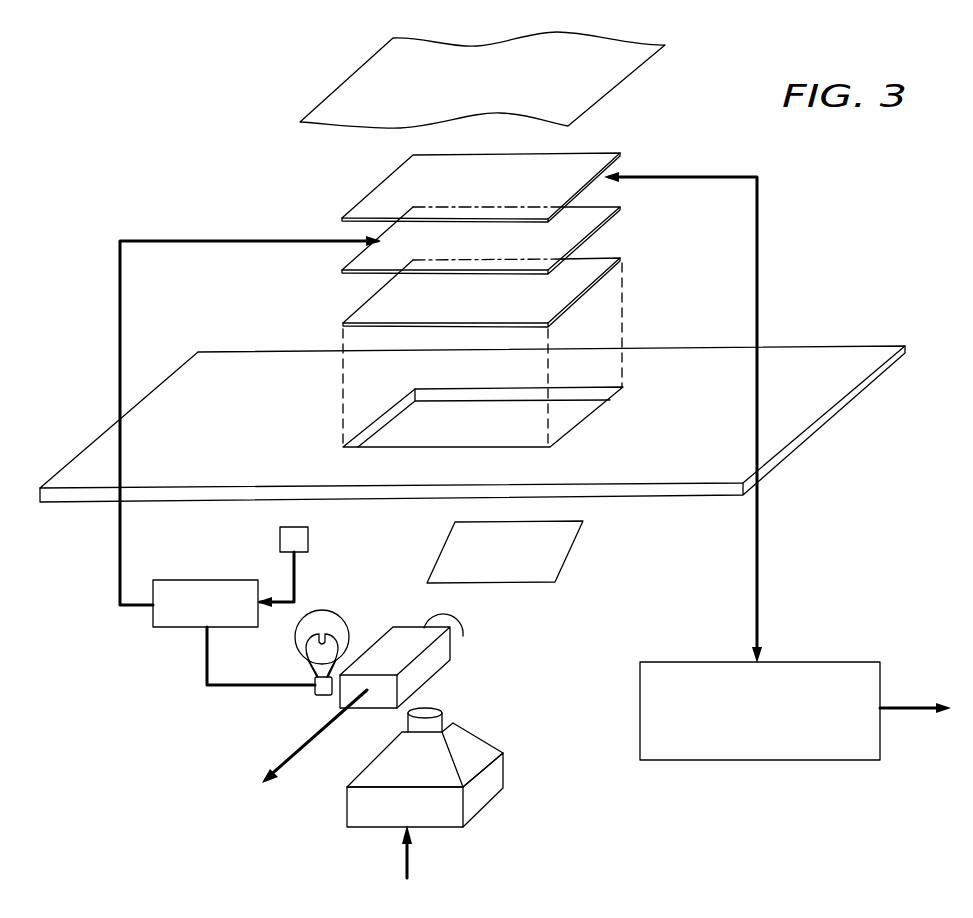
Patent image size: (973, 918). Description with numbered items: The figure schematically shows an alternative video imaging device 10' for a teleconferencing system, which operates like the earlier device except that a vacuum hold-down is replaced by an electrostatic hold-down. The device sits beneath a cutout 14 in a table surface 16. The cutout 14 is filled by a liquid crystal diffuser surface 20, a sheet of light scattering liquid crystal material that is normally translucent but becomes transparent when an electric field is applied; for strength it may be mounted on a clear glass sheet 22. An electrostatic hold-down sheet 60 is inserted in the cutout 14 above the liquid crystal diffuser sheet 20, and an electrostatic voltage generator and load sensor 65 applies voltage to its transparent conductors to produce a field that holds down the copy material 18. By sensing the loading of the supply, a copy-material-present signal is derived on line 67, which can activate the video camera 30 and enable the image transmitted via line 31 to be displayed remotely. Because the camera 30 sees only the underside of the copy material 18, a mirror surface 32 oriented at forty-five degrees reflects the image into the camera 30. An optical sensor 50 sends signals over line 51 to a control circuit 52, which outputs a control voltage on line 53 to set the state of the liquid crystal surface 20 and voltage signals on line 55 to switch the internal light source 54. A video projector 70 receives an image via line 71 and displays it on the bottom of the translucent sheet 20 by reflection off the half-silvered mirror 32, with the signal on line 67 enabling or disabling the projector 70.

The alternative video imaging device 10' is at (864, 179).
The copy material 18 is at (607, 62).
The electrostatic hold-down sheet 60 is at (607, 157).
The liquid crystal diffuser surface 20 is at (610, 208).
The clear glass sheet 22 is at (607, 262).
The table surface 16 is at (842, 355).
The cutout 14 is at (577, 408).
The line 53 is at (120, 540).
The control circuit 52 is at (178, 580).
The optical sensor 50 is at (280, 540).
The line 51 is at (296, 572).
The line 55 is at (241, 686).
The internal light source 54 is at (350, 620).
The video camera 30 is at (420, 673).
The line 31 is at (290, 755).
The mirror surface 32 is at (577, 545).
The video projector 70 is at (477, 807).
The line 71 is at (410, 862).
The electrostatic voltage generator and load sensor 65 is at (838, 662).
The line 67 is at (918, 706).